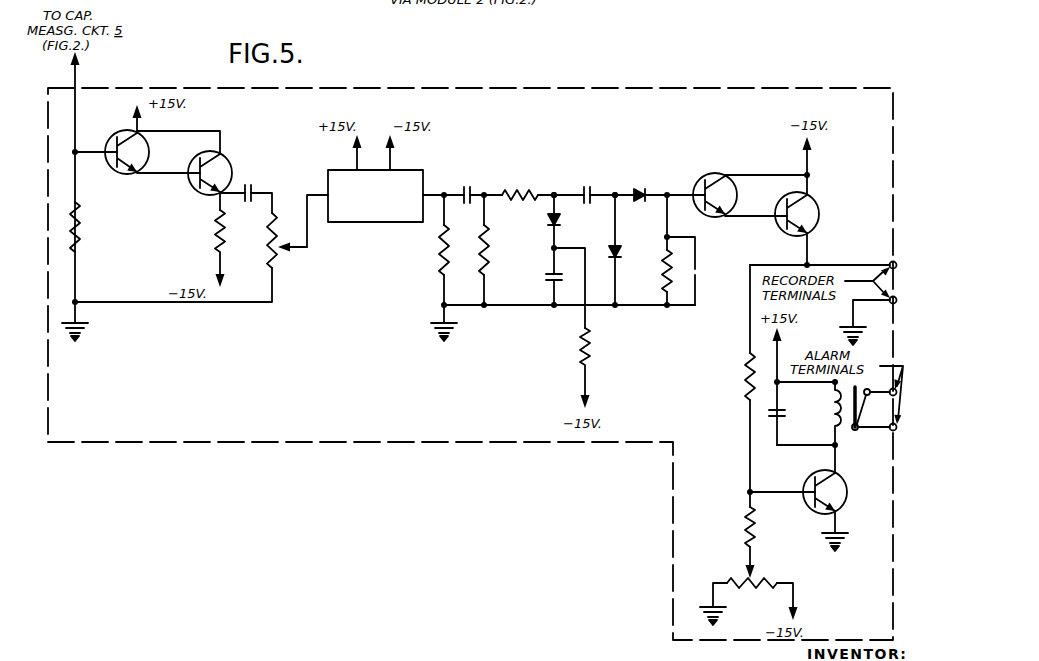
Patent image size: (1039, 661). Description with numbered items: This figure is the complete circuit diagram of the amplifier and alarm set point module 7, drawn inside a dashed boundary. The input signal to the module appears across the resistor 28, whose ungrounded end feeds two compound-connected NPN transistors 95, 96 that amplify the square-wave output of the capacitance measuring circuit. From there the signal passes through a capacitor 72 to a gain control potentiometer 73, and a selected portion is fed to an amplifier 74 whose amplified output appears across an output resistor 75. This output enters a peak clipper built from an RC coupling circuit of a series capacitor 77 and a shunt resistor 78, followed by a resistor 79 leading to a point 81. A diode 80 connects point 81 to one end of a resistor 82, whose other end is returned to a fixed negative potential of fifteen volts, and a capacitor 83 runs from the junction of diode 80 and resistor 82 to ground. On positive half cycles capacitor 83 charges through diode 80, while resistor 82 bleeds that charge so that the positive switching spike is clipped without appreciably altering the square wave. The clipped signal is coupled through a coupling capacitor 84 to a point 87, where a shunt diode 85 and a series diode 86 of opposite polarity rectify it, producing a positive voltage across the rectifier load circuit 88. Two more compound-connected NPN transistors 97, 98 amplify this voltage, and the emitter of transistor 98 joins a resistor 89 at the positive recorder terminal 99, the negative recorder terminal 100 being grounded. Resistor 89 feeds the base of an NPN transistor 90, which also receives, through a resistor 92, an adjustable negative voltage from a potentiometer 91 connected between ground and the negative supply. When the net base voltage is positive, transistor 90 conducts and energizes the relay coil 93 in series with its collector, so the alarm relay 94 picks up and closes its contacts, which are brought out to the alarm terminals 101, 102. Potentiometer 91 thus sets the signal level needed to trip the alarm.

The amplifier and alarm set point module 7 is at (516, 86).
The resistor 28 is at (82, 238).
The capacitor 72 is at (252, 186).
The gain control potentiometer 73 is at (280, 266).
The amplifier 74 is at (370, 223).
The output resistor 75 is at (440, 256).
The series capacitor 77 is at (468, 186).
The shunt resistor 78 is at (489, 255).
The resistor 79 is at (515, 186).
The diode 80 is at (562, 219).
The point 81 is at (556, 186).
The resistor 82 is at (592, 347).
The capacitor 83 is at (546, 280).
The coupling capacitor 84 is at (591, 186).
The shunt diode 85 is at (621, 255).
The series diode 86 is at (641, 202).
The point 87 is at (617, 186).
The rectifier load circuit 88 is at (678, 276).
The resistor 89 is at (746, 381).
The NPN transistor 90 is at (846, 498).
The potentiometer 91 is at (747, 589).
The resistor 92 is at (746, 523).
The relay coil 93 is at (831, 414).
The alarm relay 94 is at (842, 432).
The transistor 95 is at (116, 136).
The transistor 96 is at (195, 184).
The transistor 97 is at (700, 178).
The transistor 98 is at (821, 212).
The positive recorder terminal 99 is at (890, 262).
The negative recorder terminal 100 is at (892, 304).
The alarm terminal 101 is at (884, 396).
The alarm terminal 102 is at (890, 432).